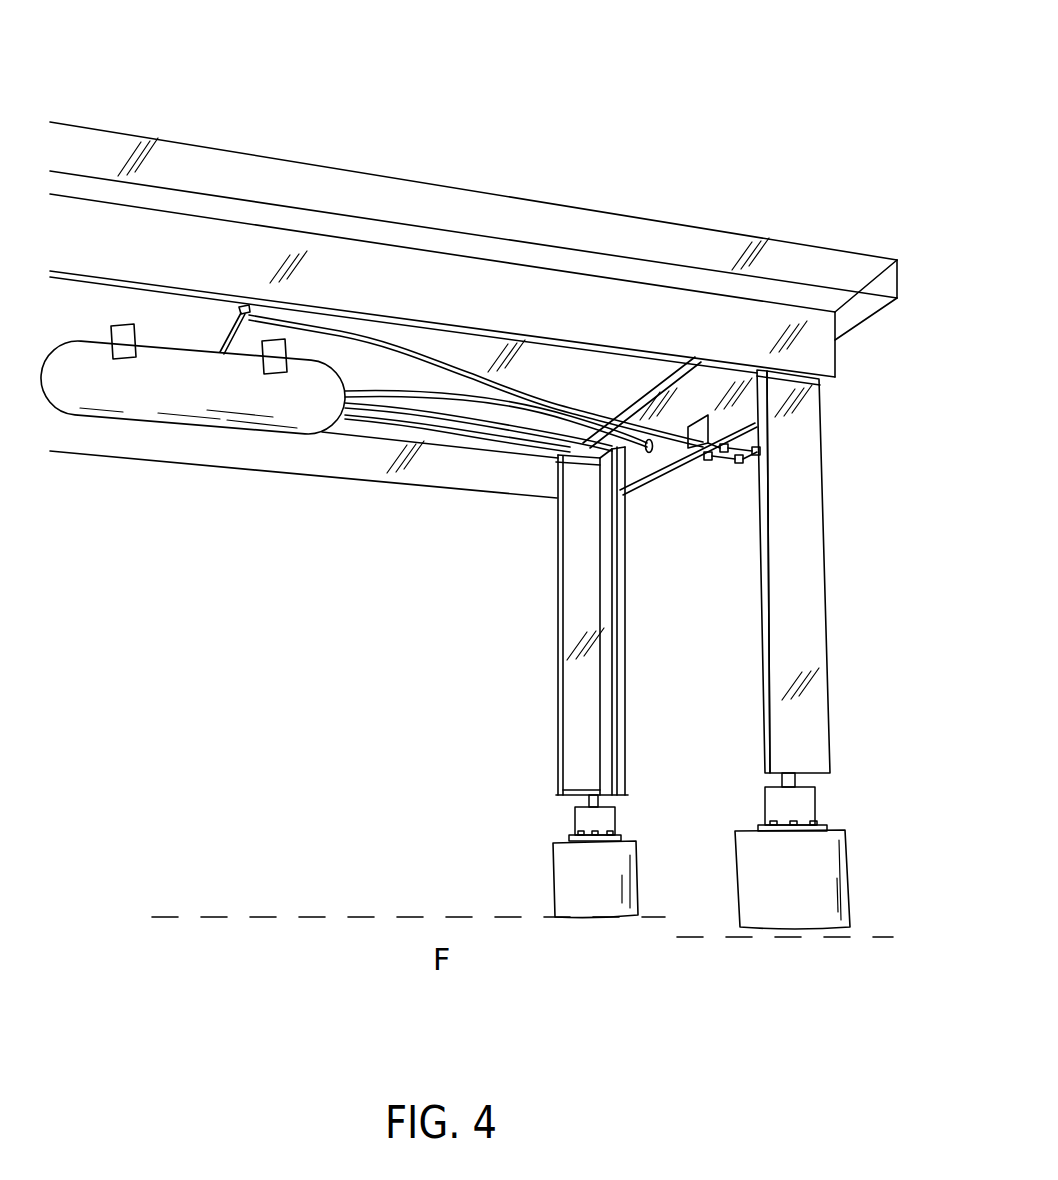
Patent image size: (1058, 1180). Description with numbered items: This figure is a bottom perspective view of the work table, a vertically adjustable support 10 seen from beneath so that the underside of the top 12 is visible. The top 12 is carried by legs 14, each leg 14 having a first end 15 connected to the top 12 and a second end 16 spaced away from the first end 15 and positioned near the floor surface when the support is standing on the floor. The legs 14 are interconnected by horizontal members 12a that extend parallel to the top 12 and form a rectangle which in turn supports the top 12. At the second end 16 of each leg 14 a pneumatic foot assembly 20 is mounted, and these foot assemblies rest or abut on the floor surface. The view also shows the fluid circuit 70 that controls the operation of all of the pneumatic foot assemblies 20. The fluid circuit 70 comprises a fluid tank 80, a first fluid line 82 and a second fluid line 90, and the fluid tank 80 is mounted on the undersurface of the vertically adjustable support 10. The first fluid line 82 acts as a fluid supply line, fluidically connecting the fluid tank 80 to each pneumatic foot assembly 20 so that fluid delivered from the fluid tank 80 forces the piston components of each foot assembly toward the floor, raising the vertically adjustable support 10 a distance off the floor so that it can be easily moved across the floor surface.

The vertically adjustable support 10 is at (459, 116).
The top 12 is at (565, 208).
The horizontal members 12a is at (248, 508).
The legs 14 is at (623, 610).
The first end 15 is at (815, 380).
The second end 16 is at (557, 796).
The pneumatic foot assembly 20 is at (535, 860).
The fluid circuit 70 is at (317, 454).
The fluid tank 80 is at (135, 420).
The first fluid line 82 is at (512, 435).
The second fluid line 90 is at (548, 402).